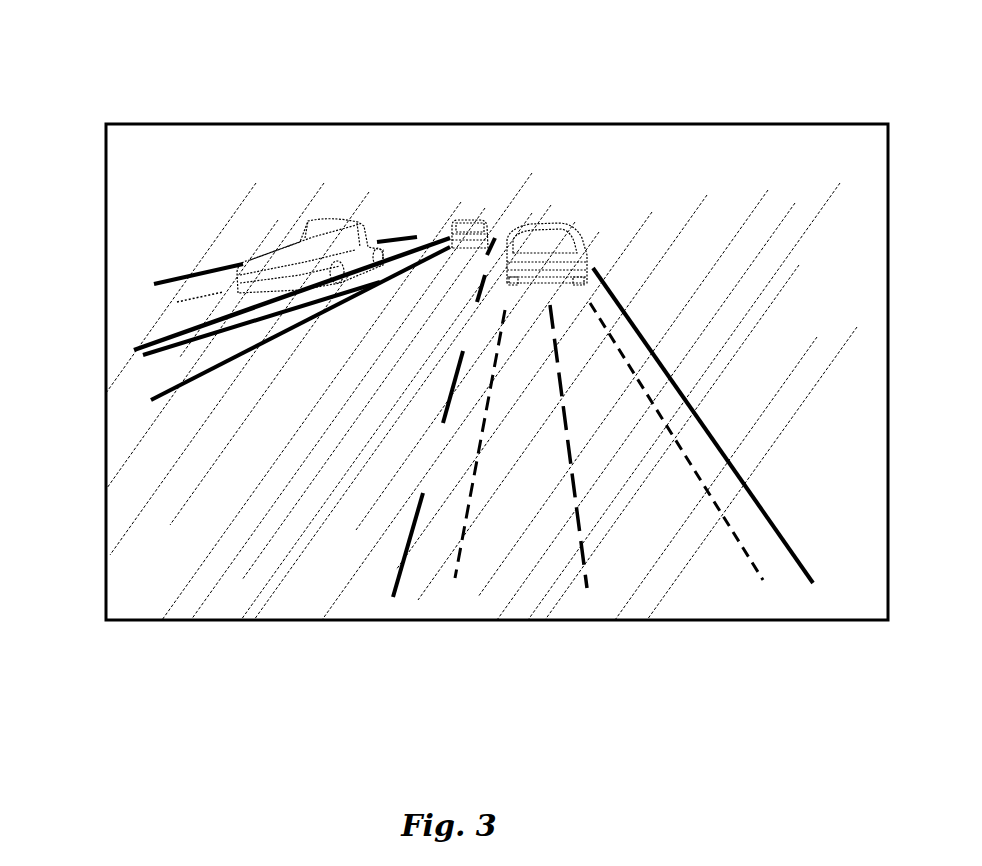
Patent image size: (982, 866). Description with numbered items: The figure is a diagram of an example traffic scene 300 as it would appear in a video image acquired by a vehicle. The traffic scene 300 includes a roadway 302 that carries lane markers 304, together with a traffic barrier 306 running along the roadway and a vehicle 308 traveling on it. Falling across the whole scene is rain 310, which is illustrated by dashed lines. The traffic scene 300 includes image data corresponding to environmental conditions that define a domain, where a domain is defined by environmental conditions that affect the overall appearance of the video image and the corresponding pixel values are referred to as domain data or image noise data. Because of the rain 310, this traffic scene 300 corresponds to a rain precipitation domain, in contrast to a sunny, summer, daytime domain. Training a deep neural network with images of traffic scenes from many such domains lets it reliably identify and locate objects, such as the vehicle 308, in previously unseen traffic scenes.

The traffic scene 300 is at (502, 36).
The roadway 302 is at (339, 510).
The lane markers 304 is at (538, 562).
The traffic barrier 306 is at (169, 390).
The vehicle 308 is at (475, 172).
The rain 310 is at (625, 183).